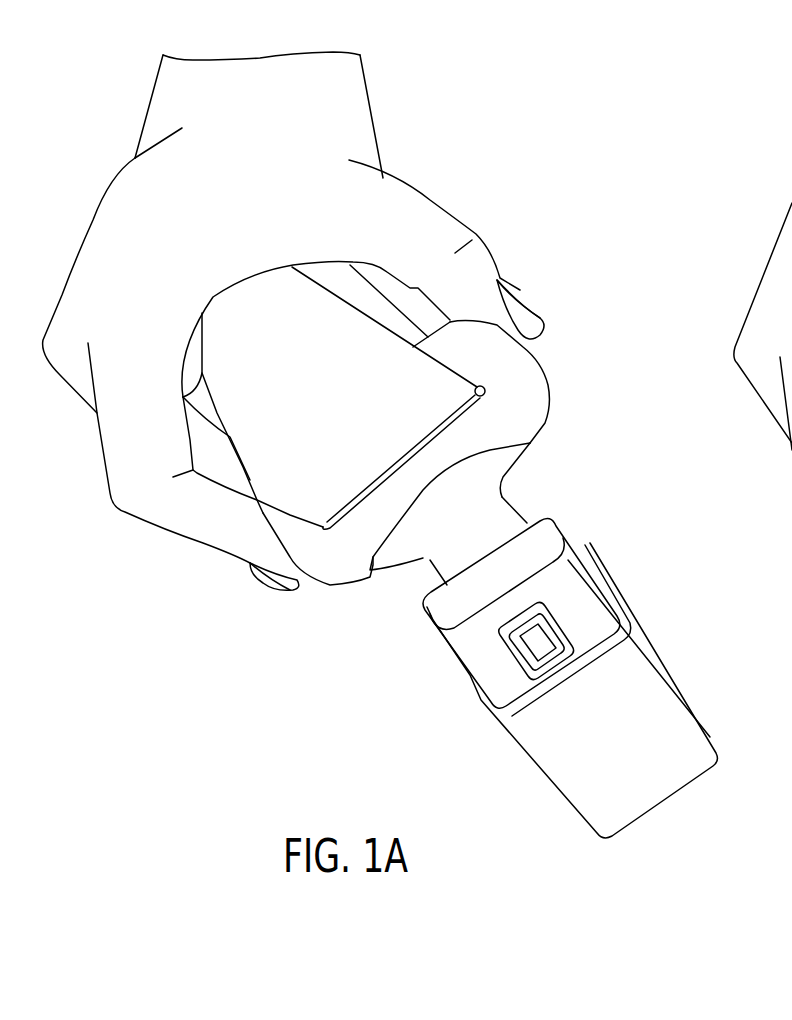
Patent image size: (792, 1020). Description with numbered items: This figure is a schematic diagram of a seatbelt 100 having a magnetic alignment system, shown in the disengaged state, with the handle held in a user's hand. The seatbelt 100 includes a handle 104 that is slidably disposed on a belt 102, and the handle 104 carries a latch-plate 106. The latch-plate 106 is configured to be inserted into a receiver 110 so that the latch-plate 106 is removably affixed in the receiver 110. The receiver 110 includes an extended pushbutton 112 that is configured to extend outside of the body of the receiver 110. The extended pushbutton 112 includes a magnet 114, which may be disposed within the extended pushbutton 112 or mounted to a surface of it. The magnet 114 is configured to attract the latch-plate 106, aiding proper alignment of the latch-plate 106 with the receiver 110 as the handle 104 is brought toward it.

The seatbelt 100 is at (557, 150).
The belt 102 is at (333, 323).
The handle 104 is at (530, 398).
The latch-plate 106 is at (490, 502).
The receiver 110 is at (692, 717).
The extended pushbutton 112 is at (472, 641).
The magnet 114 is at (535, 633).